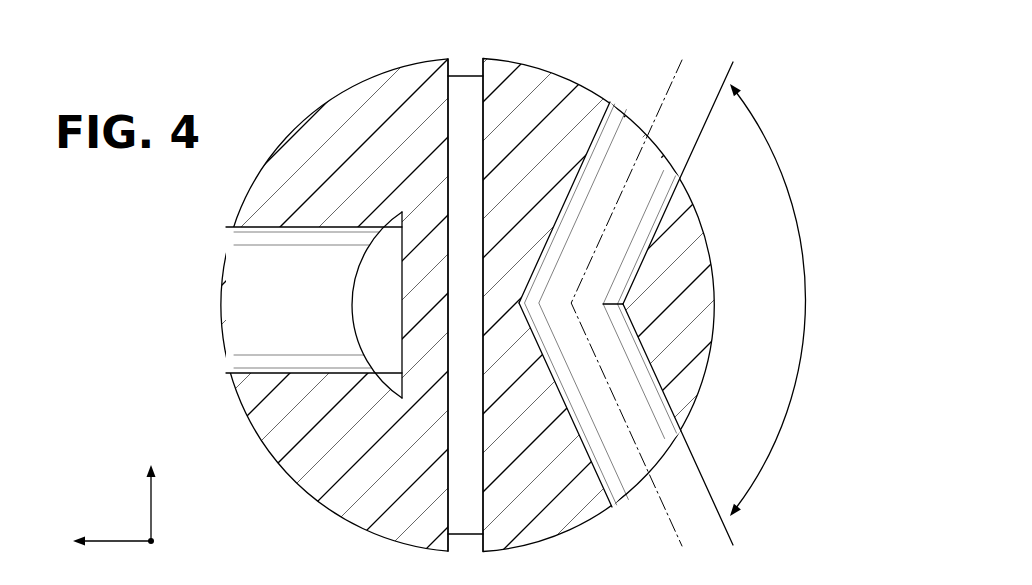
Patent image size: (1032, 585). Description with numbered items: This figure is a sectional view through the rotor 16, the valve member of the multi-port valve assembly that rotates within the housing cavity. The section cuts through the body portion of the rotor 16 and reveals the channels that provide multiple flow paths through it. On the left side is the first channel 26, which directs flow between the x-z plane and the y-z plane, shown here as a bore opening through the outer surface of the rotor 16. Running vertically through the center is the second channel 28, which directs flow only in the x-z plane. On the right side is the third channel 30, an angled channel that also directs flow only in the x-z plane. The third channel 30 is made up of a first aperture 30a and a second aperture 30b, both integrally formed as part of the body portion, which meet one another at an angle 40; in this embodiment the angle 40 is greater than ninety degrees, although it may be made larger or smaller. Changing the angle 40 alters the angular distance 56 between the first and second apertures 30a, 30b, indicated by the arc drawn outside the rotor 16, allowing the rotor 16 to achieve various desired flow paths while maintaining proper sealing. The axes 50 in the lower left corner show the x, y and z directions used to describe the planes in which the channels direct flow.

The rotor 16 is at (295, 110).
The first channel 26 is at (262, 320).
The second channel 28 is at (463, 105).
The third channel 30 is at (650, 175).
The first aperture 30a is at (675, 204).
The second aperture 30b is at (678, 423).
The angle 40 is at (610, 378).
The axes 50 is at (75, 462).
The angular distance 56 is at (778, 157).